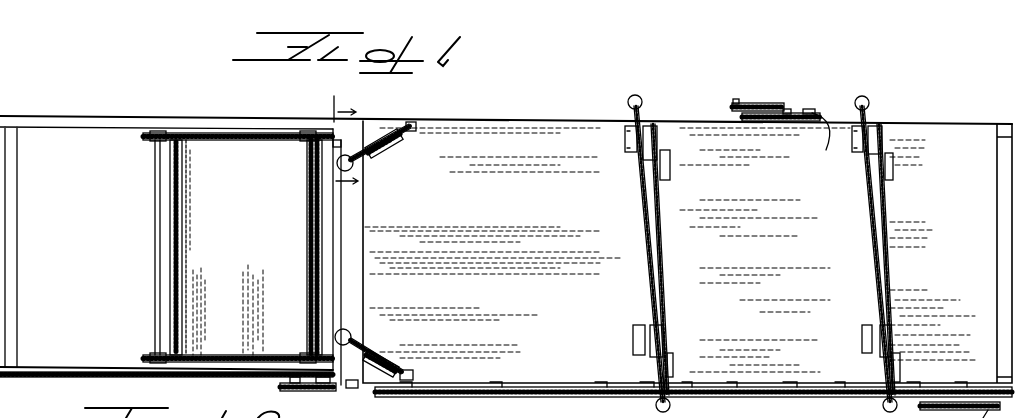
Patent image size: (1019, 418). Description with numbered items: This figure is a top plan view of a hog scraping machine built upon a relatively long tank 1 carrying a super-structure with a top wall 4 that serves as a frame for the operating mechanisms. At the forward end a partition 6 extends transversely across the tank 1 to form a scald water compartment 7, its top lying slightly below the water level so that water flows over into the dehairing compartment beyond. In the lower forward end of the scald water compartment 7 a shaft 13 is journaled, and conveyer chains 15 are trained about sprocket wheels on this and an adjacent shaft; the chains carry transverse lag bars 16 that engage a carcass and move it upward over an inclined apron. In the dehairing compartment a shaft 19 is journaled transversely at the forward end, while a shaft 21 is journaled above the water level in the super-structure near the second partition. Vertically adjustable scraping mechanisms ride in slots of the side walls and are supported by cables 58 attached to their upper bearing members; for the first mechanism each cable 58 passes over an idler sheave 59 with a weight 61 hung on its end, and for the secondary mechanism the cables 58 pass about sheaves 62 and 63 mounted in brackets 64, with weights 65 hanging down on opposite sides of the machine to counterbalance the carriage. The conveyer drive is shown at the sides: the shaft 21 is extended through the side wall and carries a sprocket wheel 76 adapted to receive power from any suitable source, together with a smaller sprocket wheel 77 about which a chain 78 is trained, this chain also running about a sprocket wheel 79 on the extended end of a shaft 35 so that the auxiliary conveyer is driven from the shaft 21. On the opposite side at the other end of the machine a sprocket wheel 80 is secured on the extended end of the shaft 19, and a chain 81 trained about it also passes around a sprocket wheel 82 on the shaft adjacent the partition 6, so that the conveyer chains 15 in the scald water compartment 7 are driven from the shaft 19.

The tank 1 is at (103, 375).
The top wall 4 is at (687, 269).
The partition 6 is at (318, 268).
The scald water compartment 7 is at (338, 146).
The shaft 13 is at (155, 272).
The conveyer chains 15 is at (276, 143).
The lag bars 16 is at (180, 289).
The shaft 19 is at (342, 296).
The shaft 21 is at (760, 95).
The shaft 35 is at (806, 113).
The cables 58 is at (658, 278).
The idler sheave 59 is at (407, 135).
The weight 61 is at (355, 170).
The sheave 62 is at (660, 145).
The sheave 63 is at (668, 350).
The brackets 64 is at (665, 166).
The weights 65 is at (645, 103).
The sprocket wheel 76 is at (736, 90).
The smaller sprocket wheel 77 is at (741, 114).
The chain 78 is at (785, 110).
The sprocket wheel 79 is at (824, 147).
The sprocket wheel 80 is at (355, 388).
The chain 81 is at (322, 392).
The sprocket wheel 82 is at (283, 386).